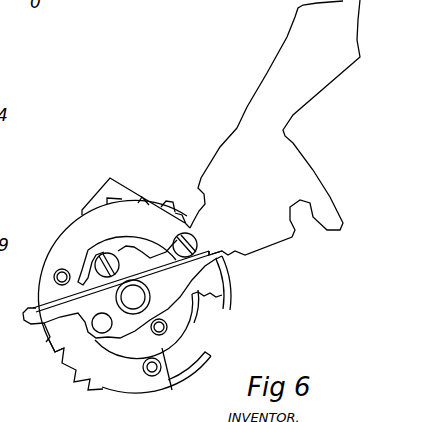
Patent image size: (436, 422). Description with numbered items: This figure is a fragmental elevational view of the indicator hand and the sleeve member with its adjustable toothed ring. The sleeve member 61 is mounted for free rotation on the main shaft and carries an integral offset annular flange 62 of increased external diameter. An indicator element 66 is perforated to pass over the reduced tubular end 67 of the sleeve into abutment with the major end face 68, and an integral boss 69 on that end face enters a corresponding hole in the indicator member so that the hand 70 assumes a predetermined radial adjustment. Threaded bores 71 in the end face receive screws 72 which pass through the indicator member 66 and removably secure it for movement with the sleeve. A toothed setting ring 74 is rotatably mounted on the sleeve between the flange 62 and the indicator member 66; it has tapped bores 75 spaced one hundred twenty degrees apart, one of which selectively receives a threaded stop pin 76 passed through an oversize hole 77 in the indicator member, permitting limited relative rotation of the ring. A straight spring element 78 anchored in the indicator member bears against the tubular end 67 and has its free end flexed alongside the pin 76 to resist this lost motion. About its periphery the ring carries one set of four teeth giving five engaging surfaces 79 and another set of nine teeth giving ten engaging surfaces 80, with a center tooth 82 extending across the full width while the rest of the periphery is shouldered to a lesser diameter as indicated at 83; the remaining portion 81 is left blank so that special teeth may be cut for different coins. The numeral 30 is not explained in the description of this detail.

The hand 70 is at (305, 42).
The shouldered reduced-diameter portion of the ring periphery 83 is at (72, 228).
The engaging surfaces 80 is at (100, 387).
The center tooth 82 is at (53, 348).
The remaining portion of the periphery 81 is at (201, 366).
The engaging surfaces 79 is at (136, 194).
The toothed setting ring 74 is at (138, 220).
The screws 72 is at (90, 263).
The threaded stop pin 76 is at (182, 233).
The tapped bores 75 is at (55, 275).
The hole 77 is at (203, 250).
The straight spring element 78 is at (213, 252).
The hook end 30 is at (40, 321).
The boss 69 is at (50, 335).
The indicator element 66 is at (172, 277).
The major end face 68 is at (200, 301).
The sleeve member 61 is at (175, 308).
The offset annular flange 62 is at (197, 323).
The threaded bores 71 is at (167, 329).
The reduced tubular end 67 is at (116, 298).